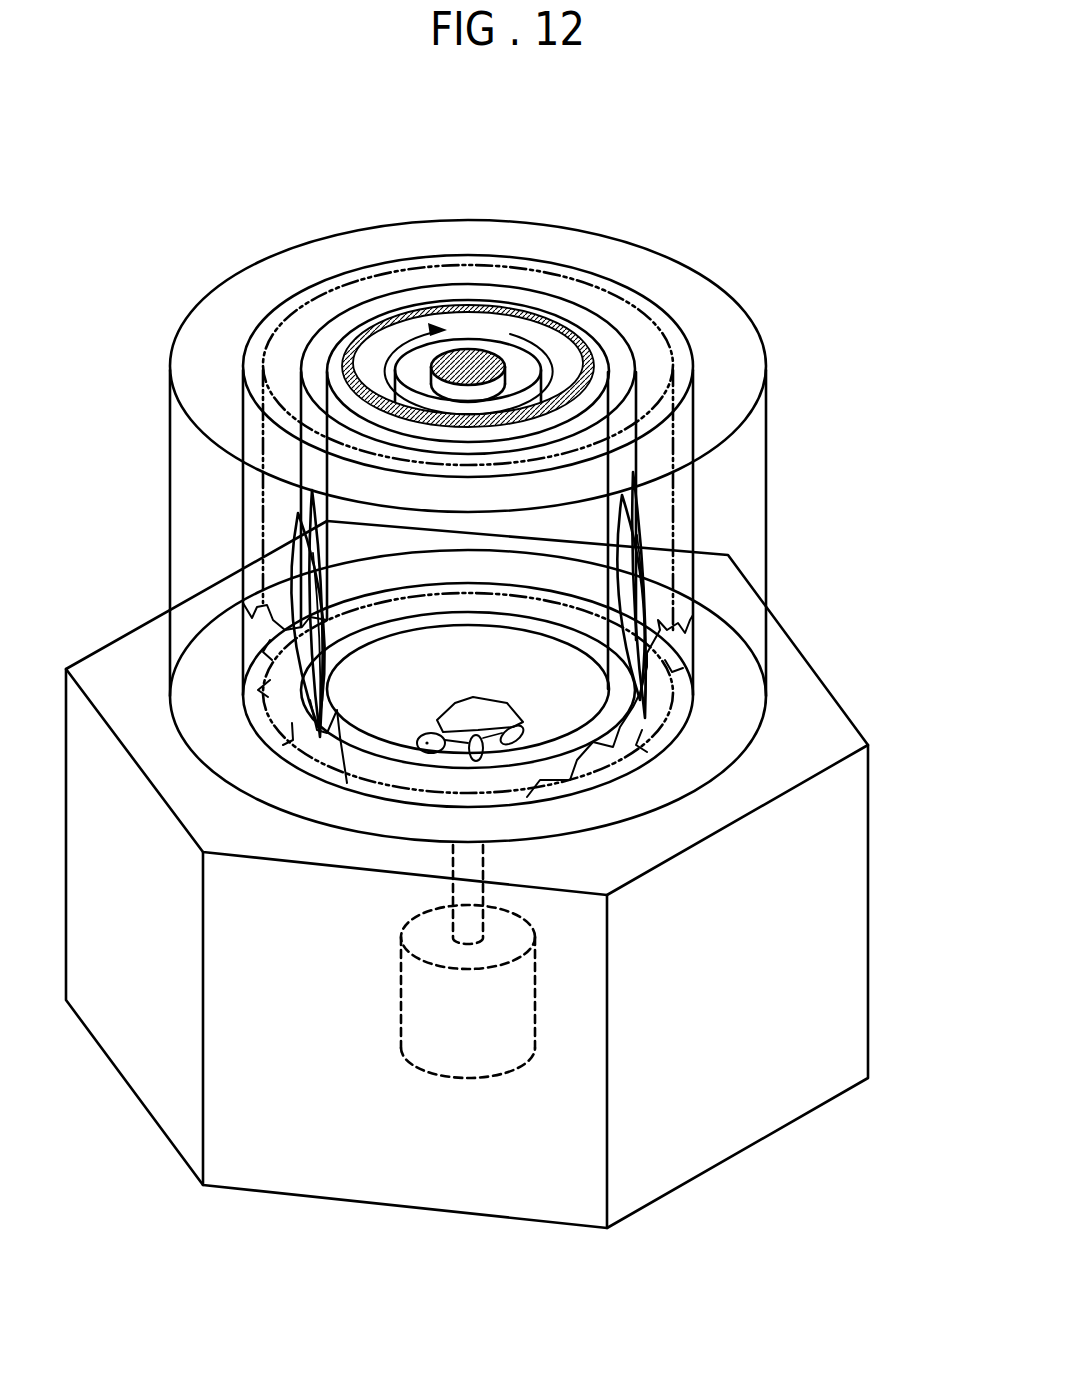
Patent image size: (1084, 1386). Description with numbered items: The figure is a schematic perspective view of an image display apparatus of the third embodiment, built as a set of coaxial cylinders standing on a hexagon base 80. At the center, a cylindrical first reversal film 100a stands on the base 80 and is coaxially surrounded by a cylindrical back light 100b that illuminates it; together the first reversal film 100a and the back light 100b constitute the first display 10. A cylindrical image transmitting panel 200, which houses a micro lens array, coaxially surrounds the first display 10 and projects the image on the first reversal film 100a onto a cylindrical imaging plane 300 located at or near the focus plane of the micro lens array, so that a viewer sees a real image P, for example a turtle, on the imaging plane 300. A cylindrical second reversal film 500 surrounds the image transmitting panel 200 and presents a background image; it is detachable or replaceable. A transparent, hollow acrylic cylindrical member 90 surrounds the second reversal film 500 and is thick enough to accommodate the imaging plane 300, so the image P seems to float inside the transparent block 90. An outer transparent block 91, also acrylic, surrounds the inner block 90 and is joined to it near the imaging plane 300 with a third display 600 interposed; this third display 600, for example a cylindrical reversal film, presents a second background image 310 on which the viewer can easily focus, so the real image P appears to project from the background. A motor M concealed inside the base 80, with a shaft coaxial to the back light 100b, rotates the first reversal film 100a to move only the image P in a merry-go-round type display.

The first display 10 is at (569, 142).
The outer transparent block 91 is at (370, 242).
The transparent cylindrical member 90 is at (419, 264).
The first reversal film 100a is at (523, 342).
The back light 100b is at (468, 347).
The image transmitting panel 200 is at (581, 342).
The second reversal film 500 is at (608, 372).
The third display 600 is at (670, 352).
The imaging plane 300 is at (680, 330).
The second background image 310 is at (682, 655).
The hexagon base 80 is at (807, 707).
The real image P is at (455, 752).
The motor M is at (473, 1078).